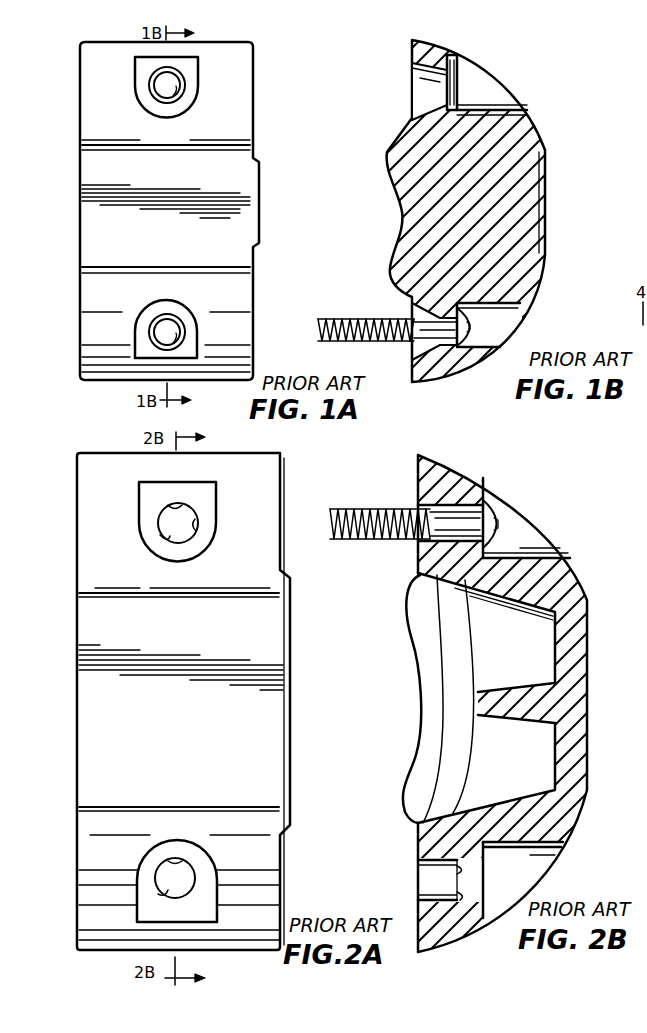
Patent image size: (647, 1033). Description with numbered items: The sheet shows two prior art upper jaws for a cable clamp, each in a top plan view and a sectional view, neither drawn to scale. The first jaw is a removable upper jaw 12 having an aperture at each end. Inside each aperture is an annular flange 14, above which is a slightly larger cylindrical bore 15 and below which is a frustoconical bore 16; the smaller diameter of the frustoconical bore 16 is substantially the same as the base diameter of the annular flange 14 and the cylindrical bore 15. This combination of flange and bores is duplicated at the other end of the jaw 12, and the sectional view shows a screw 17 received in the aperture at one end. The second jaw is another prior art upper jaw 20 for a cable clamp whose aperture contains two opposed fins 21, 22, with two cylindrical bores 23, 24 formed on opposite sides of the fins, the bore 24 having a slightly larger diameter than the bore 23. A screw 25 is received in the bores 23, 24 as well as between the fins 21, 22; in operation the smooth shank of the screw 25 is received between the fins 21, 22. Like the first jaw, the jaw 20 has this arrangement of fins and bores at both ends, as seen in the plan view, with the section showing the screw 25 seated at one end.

In FIG. 1A, the upper jaw 12 is at (257, 160).
In FIG. 1A, the annular flange 14 is at (174, 93).
In FIG. 1B, the annular flange 14 is at (514, 98).
In FIG. 1A, the cylindrical bore 15 is at (160, 100).
In FIG. 1B, the cylindrical bore 15 is at (458, 80).
In FIG. 1B, the frustoconical bore 16 is at (412, 92).
In FIG. 1B, the screw 17 is at (473, 343).
In FIG. 2A, the upper jaw 20 is at (283, 498).
In FIG. 2B, the upper jaw 20 is at (560, 541).
In FIG. 2A, the fin 21 is at (174, 507).
In FIG. 2B, the fin 21 is at (462, 502).
In FIG. 2A, the fin 22 is at (165, 538).
In FIG. 2B, the fin 22 is at (464, 545).
In FIG. 2A, the cylindrical bore 23 is at (198, 523).
In FIG. 2B, the cylindrical bore 23 is at (483, 503).
In FIG. 2B, the cylindrical bore 24 is at (437, 495).
In FIG. 2B, the screw 25 is at (503, 505).